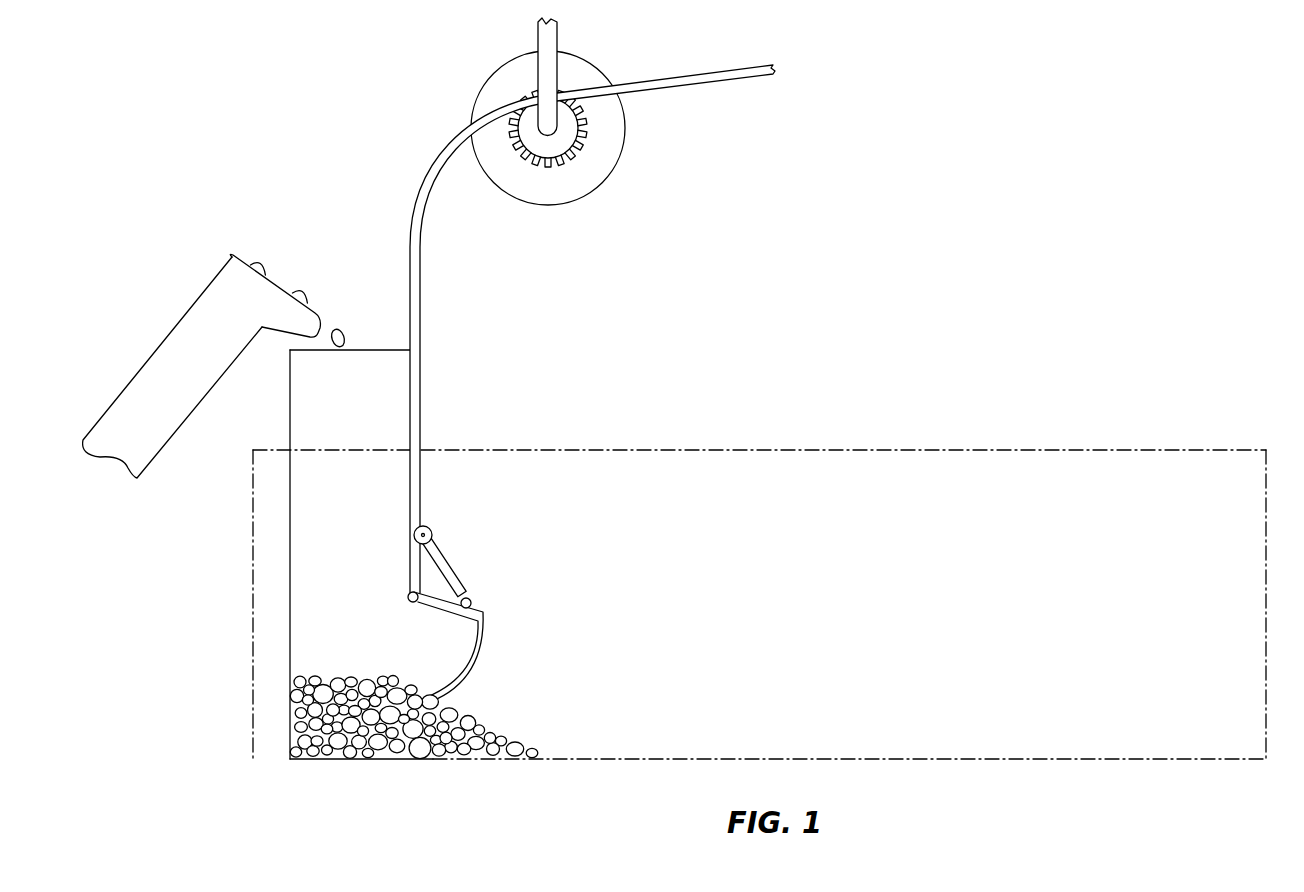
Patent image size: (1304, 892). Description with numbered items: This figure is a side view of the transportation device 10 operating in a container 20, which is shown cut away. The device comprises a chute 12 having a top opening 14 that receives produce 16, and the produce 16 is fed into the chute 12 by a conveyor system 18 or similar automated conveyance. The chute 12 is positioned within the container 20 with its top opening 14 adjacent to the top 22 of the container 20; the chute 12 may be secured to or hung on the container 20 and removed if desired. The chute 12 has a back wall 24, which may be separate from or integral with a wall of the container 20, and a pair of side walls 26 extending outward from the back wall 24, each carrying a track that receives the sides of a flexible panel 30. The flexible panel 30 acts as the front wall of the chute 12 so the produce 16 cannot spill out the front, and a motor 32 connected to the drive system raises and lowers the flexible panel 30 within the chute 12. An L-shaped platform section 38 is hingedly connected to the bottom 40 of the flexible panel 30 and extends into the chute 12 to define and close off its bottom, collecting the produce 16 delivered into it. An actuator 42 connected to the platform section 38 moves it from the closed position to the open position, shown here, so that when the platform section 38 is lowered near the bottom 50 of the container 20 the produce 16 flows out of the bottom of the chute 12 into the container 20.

The transportation device 10 is at (200, 102).
The chute 12 is at (290, 393).
The top opening 14 is at (373, 350).
The produce 16 is at (341, 345).
The conveyor system 18 is at (232, 257).
The container 20 is at (852, 438).
The top of the container 22 is at (500, 450).
The back wall 24 is at (290, 572).
The side walls 26 is at (333, 500).
The flexible panel 30 is at (437, 167).
The motor 32 is at (493, 72).
The platform section 38 is at (483, 625).
The bottom of the flexible panel 40 is at (408, 568).
The actuator 42 is at (452, 567).
The bottom of the container 50 is at (636, 759).